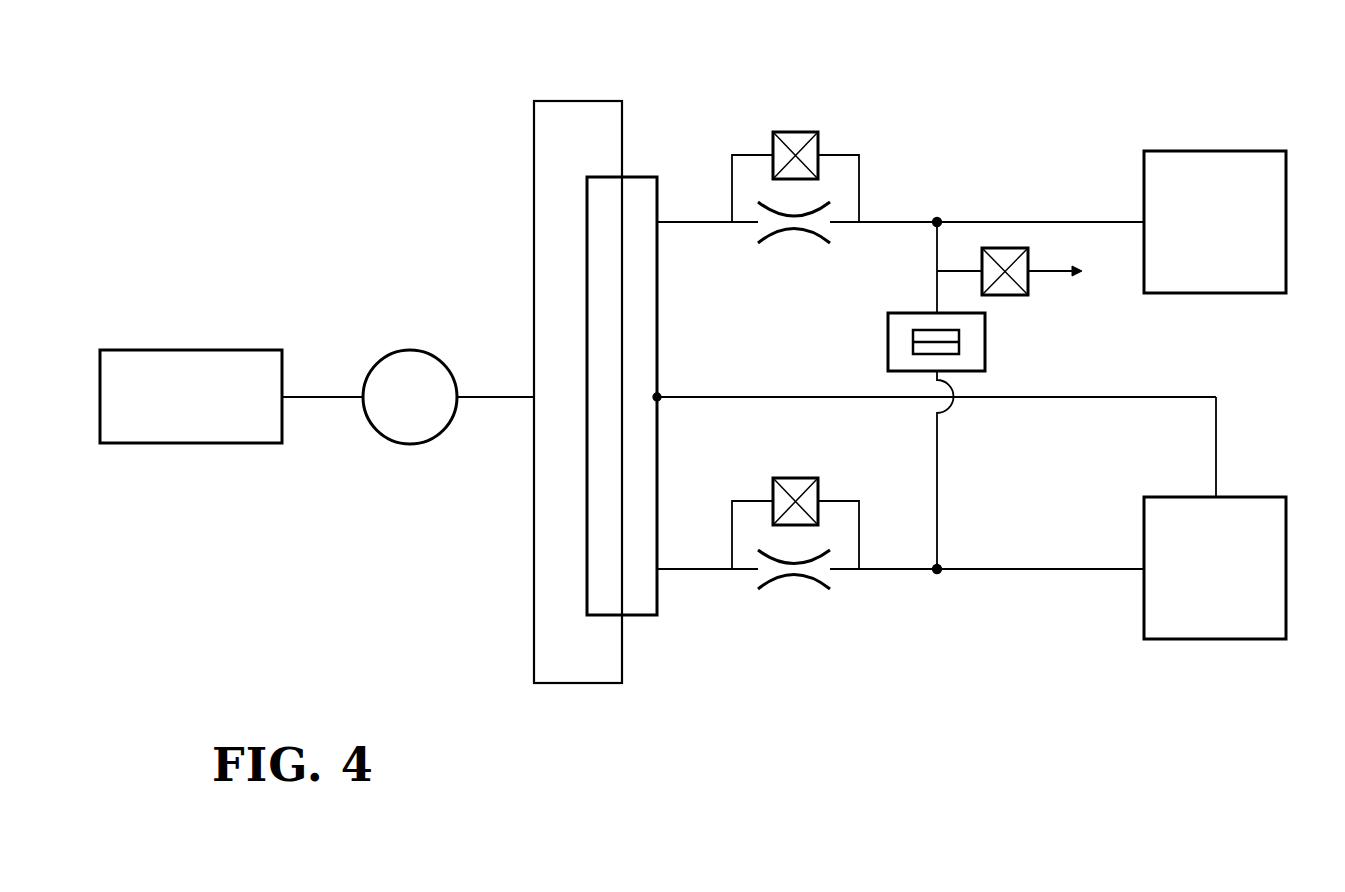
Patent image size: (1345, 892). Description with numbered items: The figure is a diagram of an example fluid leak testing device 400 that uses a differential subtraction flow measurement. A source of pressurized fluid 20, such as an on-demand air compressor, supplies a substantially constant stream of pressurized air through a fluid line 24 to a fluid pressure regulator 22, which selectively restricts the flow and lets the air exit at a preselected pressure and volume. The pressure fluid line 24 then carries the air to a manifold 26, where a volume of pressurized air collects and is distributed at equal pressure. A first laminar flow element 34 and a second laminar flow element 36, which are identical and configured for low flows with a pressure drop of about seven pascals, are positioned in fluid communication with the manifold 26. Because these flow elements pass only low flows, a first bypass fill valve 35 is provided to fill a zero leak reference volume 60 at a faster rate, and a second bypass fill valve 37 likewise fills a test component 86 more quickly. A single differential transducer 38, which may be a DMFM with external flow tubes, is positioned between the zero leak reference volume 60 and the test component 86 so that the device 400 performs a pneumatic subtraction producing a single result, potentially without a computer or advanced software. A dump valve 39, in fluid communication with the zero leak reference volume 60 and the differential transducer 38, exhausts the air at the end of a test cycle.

The fluid leak testing device 400 is at (402, 44).
The source of pressurized fluid 20 is at (180, 350).
The fluid pressure regulator 22 is at (408, 350).
The fluid line 24 is at (320, 397).
The manifold 26 is at (657, 318).
The first laminar flow element 34 is at (794, 231).
The first bypass fill valve 35 is at (795, 132).
The second laminar flow element 36 is at (794, 577).
The second bypass fill valve 37 is at (796, 478).
The differential transducer 38 is at (985, 342).
The dump valve 39 is at (1005, 295).
The zero leak reference volume 60 is at (1253, 151).
The test component 86 is at (1253, 497).